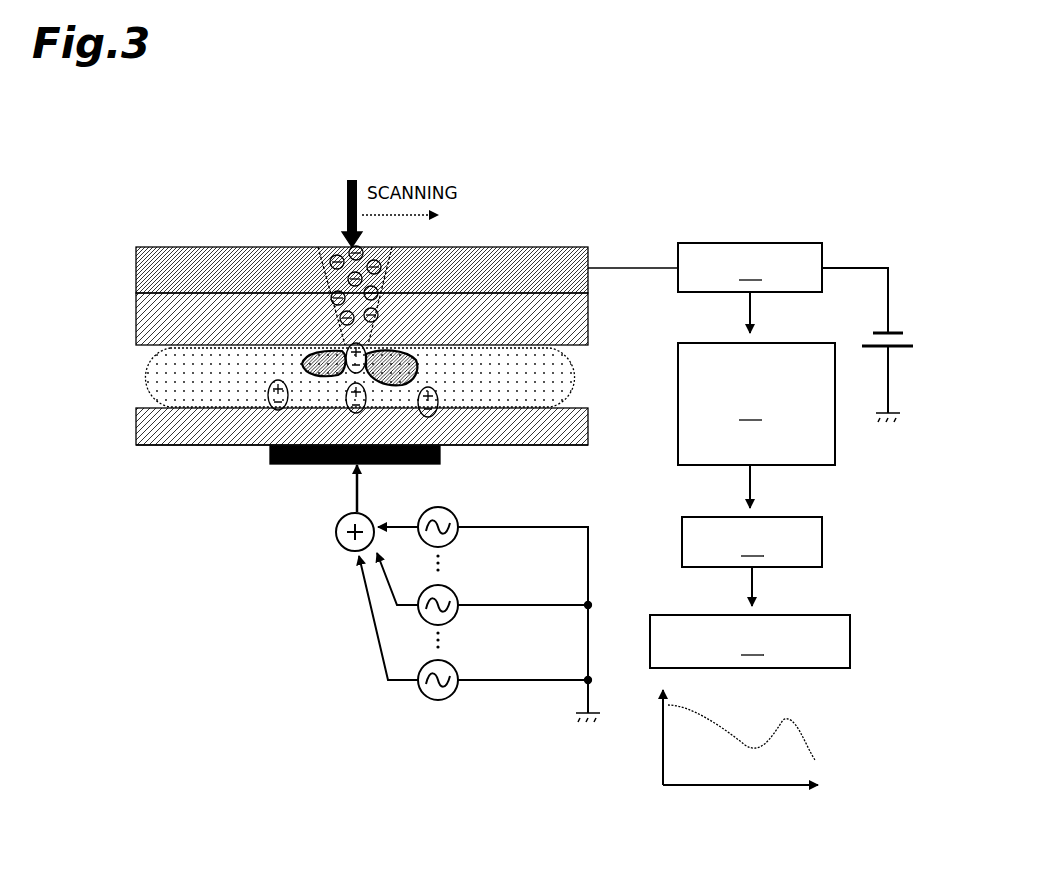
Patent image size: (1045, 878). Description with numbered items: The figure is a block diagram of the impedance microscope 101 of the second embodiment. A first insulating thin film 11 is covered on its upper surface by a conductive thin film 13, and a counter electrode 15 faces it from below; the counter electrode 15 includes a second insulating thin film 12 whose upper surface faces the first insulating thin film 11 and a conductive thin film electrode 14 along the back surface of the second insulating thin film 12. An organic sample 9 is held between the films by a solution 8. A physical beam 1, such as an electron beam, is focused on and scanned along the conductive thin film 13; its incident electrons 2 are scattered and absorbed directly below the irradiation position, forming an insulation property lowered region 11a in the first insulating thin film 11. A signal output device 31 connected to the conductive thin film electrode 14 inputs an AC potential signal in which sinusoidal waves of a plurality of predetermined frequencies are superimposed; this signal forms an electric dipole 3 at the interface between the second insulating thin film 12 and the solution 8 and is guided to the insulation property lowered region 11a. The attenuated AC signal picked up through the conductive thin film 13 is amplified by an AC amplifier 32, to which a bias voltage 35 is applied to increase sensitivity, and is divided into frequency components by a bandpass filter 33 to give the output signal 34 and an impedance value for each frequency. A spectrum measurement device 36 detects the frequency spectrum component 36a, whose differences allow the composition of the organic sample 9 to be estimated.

The physical beam 1 is at (346, 210).
The incident electrons 2 is at (333, 258).
The electric dipole 3 is at (438, 412).
The solution 8 is at (140, 378).
The organic sample 9 is at (418, 368).
The first insulating thin film 11 is at (136, 313).
The insulation property lowered region 11a is at (410, 305).
The second insulating thin film 12 is at (254, 447).
The conductive thin film 13 is at (185, 245).
The conductive thin film electrode 14 is at (302, 466).
The counter electrode 15 is at (228, 462).
The signal output device 31 is at (438, 720).
The AC amplifier 32 is at (750, 267).
The bandpass filter 33 is at (756, 404).
The output signal 34 is at (752, 542).
The bias voltage 35 is at (897, 350).
The spectrum measurement device 36 is at (750, 641).
The frequency spectrum component 36a is at (835, 738).
The impedance microscope 101 is at (672, 226).